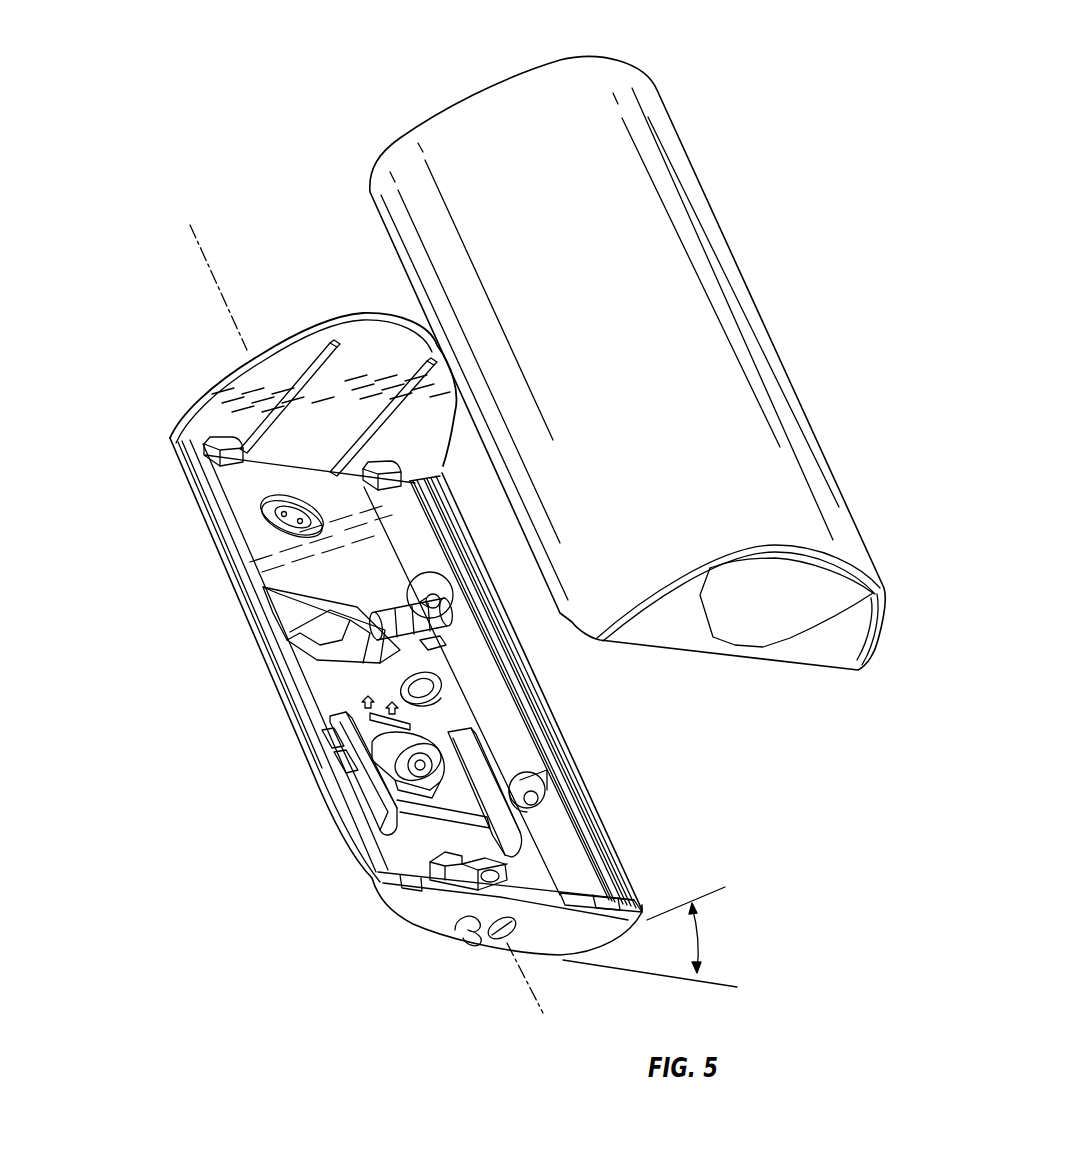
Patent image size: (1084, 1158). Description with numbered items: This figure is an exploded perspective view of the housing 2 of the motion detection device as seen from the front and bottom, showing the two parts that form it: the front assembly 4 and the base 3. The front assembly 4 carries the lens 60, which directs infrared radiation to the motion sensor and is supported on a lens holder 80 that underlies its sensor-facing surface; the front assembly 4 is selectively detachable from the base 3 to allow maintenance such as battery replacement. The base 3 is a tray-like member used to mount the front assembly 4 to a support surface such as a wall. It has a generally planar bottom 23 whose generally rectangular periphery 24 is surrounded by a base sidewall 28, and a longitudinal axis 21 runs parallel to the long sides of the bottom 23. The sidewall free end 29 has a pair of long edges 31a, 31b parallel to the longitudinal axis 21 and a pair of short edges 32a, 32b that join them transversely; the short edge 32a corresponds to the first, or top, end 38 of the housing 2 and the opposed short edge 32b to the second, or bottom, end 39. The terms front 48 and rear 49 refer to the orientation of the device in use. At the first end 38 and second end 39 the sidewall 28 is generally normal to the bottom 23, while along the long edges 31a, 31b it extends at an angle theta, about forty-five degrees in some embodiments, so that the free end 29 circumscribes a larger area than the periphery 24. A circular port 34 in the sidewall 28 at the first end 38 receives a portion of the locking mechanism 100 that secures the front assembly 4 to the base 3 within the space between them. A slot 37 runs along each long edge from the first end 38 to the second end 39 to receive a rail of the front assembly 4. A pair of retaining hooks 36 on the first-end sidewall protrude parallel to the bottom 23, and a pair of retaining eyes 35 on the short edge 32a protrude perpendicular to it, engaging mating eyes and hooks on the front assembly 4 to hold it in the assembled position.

The housing 2 is at (292, 68).
The base 3 is at (253, 727).
The front assembly 4 is at (782, 277).
The longitudinal axis 21 is at (222, 292).
The bottom 23 is at (253, 547).
The periphery 24 is at (393, 540).
The base sidewall 28 is at (510, 720).
The sidewall free end 29 is at (603, 827).
The long edge 31a is at (186, 491).
The long edge 31b is at (567, 760).
The short edge 32a is at (357, 318).
The short edge 32b is at (573, 900).
The circular port 34 is at (500, 941).
The retaining eyes 35 is at (417, 888).
The retaining hooks 36 is at (216, 440).
The slot 37 is at (303, 677).
The first end 38 is at (192, 157).
The second end 39 is at (437, 927).
The front 48 is at (792, 203).
The rear 49 is at (162, 703).
The lens 60 is at (795, 462).
The lens holder 80 is at (827, 657).
The locking mechanism 100 is at (413, 857).